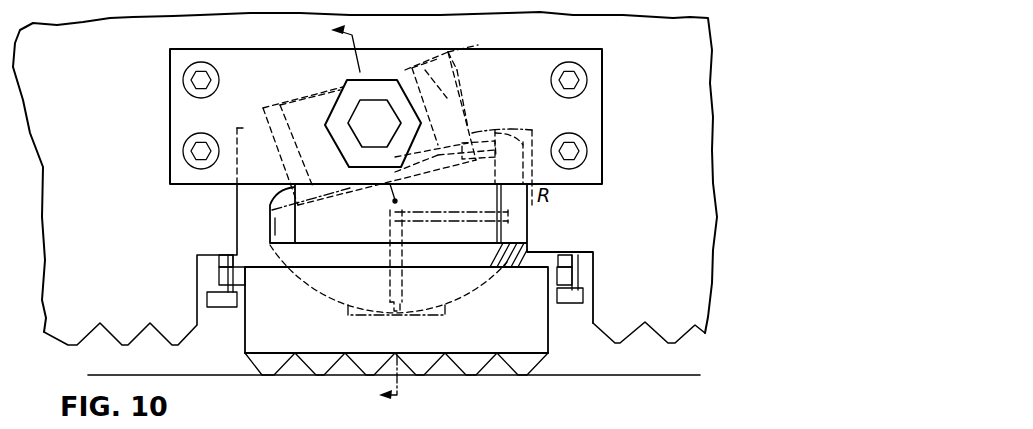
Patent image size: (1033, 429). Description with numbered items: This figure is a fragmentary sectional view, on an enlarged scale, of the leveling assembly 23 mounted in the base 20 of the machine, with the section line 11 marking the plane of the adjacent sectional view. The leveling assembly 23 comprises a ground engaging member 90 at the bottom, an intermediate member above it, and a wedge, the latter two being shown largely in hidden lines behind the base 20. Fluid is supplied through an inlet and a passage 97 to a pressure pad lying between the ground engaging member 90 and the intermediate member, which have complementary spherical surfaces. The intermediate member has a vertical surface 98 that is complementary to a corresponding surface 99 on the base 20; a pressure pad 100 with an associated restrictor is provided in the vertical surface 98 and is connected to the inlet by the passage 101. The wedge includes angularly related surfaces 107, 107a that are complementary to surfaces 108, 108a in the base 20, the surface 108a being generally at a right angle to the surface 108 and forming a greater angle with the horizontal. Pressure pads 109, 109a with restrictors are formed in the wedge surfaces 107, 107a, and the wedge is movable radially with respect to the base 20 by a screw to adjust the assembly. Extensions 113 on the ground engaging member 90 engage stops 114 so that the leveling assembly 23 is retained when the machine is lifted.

The section line 11- 11 is at (348, 219).
The base 20 is at (705, 170).
The leveling assembly 23 is at (652, 106).
The ground engaging member 90 is at (548, 340).
The passage 97 is at (390, 284).
The vertical surface 98 is at (528, 231).
The surface 99 is at (528, 250).
The pressure pad 100 is at (531, 215).
The passage 101 is at (417, 208).
The surface 107 is at (384, 80).
The surface 107a is at (480, 56).
The surface 108 is at (442, 62).
The surface 108a is at (458, 70).
The pressure pad 109 is at (412, 95).
The pressure pad 109a is at (460, 92).
The extensions 113 is at (219, 277).
The stops 114 is at (212, 308).